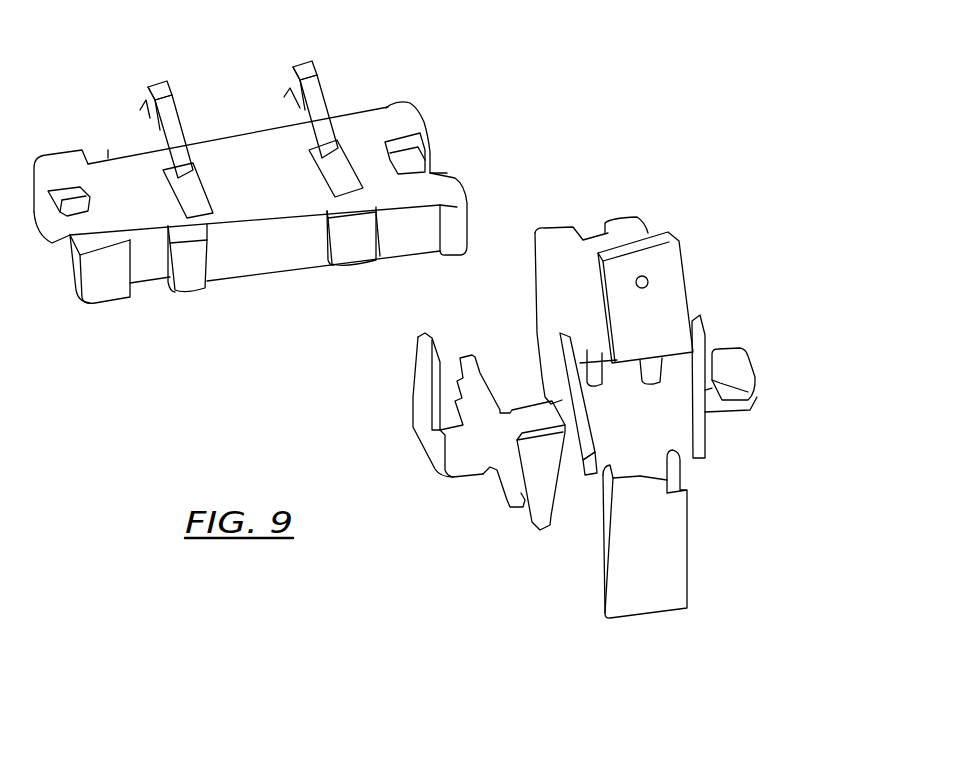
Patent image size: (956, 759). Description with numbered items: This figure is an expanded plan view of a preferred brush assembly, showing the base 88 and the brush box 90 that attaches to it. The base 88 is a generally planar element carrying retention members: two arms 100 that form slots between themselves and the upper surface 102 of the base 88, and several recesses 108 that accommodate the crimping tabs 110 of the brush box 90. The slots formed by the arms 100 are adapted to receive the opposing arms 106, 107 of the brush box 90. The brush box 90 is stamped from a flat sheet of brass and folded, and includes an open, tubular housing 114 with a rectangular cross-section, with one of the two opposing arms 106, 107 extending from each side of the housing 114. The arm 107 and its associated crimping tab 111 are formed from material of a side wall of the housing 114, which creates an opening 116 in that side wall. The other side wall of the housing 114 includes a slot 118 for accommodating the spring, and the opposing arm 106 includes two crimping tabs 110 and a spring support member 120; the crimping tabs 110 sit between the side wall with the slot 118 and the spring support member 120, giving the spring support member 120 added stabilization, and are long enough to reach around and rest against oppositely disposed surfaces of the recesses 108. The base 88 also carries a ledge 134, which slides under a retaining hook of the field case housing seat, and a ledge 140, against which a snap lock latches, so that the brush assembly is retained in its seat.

The base 88 is at (487, 104).
The brush box 90 is at (728, 248).
The arms 100 is at (300, 68).
The upper surface 102 is at (279, 182).
The opposing arm 106 is at (550, 417).
The opposing arm 107 is at (717, 398).
The recesses 108 is at (108, 156).
The crimping tabs 110 is at (473, 365).
The crimping tab 111 is at (728, 358).
The housing 114 is at (557, 300).
The opening 116 is at (660, 414).
The slot 118 is at (597, 423).
The spring support member 120 is at (425, 382).
The ledge 134 is at (63, 212).
The ledge 140 is at (410, 161).